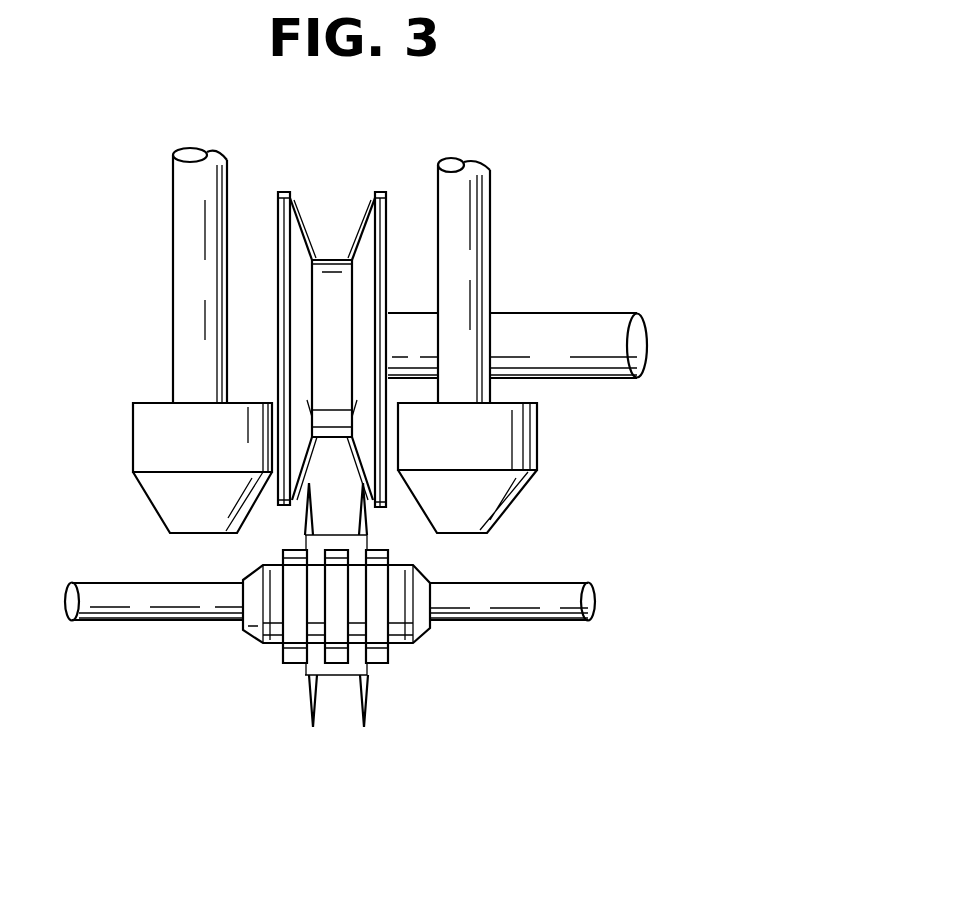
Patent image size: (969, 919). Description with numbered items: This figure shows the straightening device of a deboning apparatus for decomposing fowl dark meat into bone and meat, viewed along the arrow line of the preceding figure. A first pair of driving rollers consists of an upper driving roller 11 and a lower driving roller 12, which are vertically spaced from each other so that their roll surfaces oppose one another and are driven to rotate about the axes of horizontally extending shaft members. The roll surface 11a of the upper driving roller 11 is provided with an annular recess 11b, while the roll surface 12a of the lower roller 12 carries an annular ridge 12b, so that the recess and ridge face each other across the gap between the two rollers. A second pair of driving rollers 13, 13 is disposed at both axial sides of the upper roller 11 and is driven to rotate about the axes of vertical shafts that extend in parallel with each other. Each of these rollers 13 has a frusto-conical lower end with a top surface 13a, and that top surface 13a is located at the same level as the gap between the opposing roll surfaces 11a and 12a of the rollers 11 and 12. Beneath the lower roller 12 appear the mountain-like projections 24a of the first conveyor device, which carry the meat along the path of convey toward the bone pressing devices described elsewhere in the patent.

The upper driving roller 11 is at (335, 299).
The roll surface 11a is at (283, 192).
The annular recess 11b is at (330, 260).
The second pair of driving rollers 13 is at (334, 472).
The top surface 13a is at (183, 533).
The lower driving roller 12 is at (330, 645).
The roll surface 12a is at (410, 562).
The annular ridge 12b is at (375, 667).
The mountain-like projections 24a is at (360, 505).